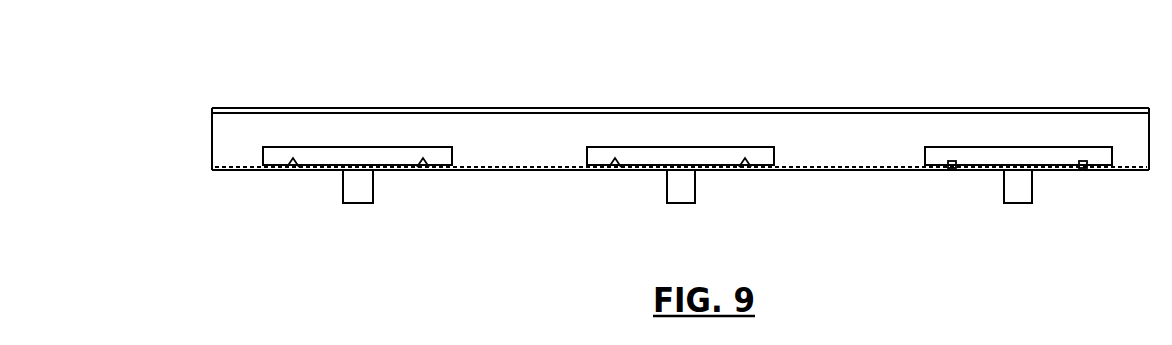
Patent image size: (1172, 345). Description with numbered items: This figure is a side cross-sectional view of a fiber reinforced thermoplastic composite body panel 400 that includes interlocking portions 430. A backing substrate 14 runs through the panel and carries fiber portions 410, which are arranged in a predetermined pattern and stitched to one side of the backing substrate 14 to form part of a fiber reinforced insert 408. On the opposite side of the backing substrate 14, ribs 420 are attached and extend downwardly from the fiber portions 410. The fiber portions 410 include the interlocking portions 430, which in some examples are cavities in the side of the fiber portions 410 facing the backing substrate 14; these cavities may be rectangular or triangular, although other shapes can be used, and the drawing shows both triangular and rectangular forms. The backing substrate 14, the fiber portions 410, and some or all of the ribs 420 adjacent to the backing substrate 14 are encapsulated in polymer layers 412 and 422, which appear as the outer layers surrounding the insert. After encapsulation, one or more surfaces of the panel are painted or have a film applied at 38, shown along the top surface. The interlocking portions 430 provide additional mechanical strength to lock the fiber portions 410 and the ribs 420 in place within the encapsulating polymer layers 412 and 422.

The backing substrate 14 is at (236, 170).
The paint or film 38 is at (364, 108).
The fiber reinforced thermoplastic composite body panel 400 is at (528, 68).
The fiber reinforced insert 408 is at (246, 160).
The fiber portions 410 is at (387, 170).
The polymer layer 412 is at (835, 132).
The ribs 420 is at (357, 192).
The polymer layer 422 is at (808, 170).
The interlocking portions 430 is at (294, 168).